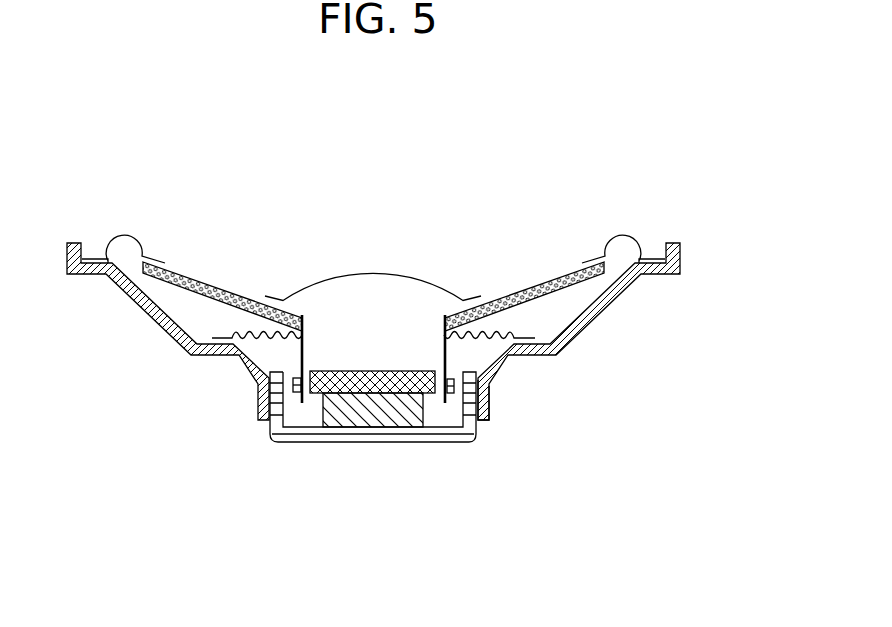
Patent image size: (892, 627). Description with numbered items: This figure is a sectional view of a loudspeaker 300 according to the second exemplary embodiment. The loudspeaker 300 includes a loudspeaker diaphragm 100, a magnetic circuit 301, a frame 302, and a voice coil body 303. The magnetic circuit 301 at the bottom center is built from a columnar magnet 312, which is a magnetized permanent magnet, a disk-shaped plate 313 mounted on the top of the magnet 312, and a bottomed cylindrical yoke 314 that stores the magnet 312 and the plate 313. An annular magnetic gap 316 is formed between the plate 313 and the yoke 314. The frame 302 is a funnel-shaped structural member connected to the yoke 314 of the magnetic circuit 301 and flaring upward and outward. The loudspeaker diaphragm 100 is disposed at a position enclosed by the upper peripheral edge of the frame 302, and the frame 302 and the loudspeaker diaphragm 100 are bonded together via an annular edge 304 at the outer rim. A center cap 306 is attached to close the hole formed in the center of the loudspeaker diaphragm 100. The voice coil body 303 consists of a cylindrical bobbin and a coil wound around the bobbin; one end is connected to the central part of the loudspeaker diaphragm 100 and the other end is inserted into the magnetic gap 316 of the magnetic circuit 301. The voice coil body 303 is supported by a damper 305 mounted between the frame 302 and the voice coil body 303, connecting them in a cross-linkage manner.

The loudspeaker 300 is at (542, 174).
The loudspeaker diaphragm 100 is at (515, 290).
The magnetic circuit 301 is at (372, 371).
The frame 302 is at (597, 313).
The voice coil body 303 is at (447, 401).
The annular edge 304 is at (622, 242).
The damper 305 is at (235, 331).
The center cap 306 is at (322, 277).
The magnet 312 is at (342, 413).
The plate 313 is at (397, 388).
The yoke 314 is at (293, 442).
The magnetic gap 316 is at (489, 383).